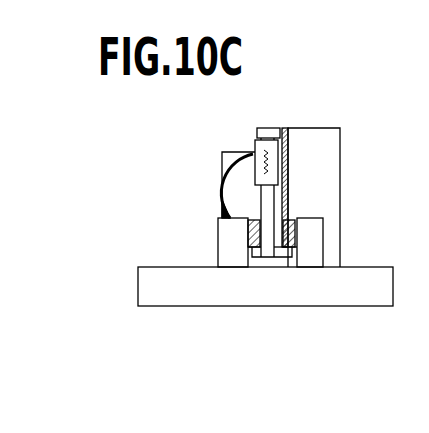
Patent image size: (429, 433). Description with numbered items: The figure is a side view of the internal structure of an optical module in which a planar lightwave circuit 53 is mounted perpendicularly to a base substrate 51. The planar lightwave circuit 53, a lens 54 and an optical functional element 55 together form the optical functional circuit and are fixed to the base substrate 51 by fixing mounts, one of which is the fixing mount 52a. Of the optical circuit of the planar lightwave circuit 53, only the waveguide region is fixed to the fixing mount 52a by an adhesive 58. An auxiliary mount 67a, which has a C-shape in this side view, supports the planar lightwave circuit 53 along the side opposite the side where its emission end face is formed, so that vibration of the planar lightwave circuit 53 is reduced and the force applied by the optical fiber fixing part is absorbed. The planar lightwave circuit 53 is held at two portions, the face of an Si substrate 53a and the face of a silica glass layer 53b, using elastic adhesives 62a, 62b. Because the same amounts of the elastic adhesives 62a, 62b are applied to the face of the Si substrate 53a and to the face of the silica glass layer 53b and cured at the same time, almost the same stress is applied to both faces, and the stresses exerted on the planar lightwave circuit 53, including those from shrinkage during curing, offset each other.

The base substrate 51 is at (155, 288).
The fixing mount 52a is at (315, 127).
The planar lightwave circuit 53 is at (267, 128).
The Si substrate 53a is at (277, 247).
The silica glass layer 53b is at (266, 247).
The lens 54 is at (232, 192).
The optical functional element 55 is at (237, 150).
The adhesive 58 is at (286, 128).
The elastic adhesive 62a is at (296, 262).
The elastic adhesive 62b is at (253, 257).
The auxiliary mount 67a is at (228, 243).